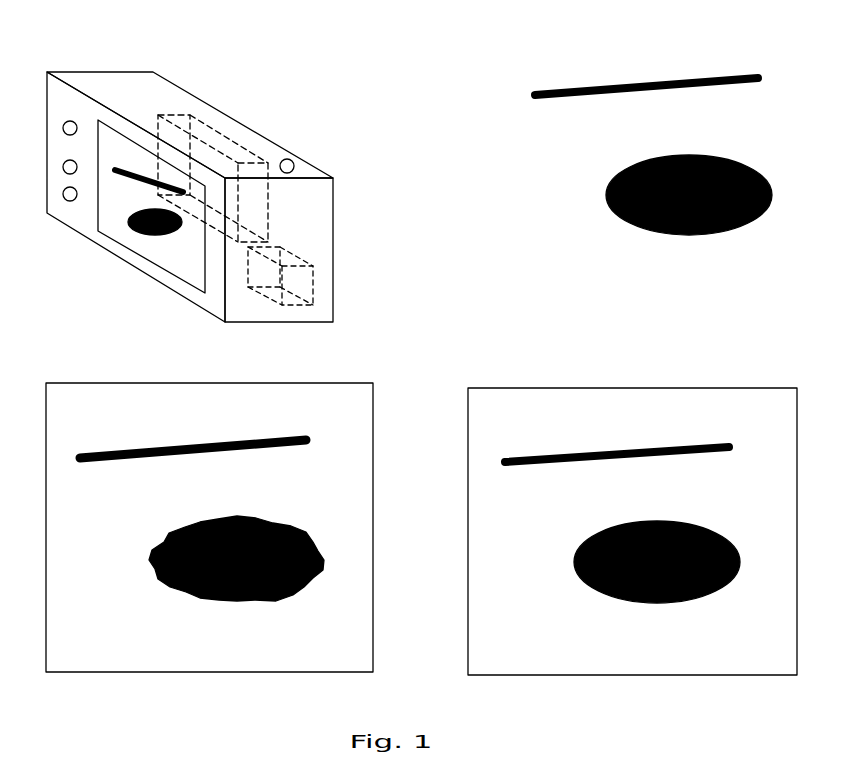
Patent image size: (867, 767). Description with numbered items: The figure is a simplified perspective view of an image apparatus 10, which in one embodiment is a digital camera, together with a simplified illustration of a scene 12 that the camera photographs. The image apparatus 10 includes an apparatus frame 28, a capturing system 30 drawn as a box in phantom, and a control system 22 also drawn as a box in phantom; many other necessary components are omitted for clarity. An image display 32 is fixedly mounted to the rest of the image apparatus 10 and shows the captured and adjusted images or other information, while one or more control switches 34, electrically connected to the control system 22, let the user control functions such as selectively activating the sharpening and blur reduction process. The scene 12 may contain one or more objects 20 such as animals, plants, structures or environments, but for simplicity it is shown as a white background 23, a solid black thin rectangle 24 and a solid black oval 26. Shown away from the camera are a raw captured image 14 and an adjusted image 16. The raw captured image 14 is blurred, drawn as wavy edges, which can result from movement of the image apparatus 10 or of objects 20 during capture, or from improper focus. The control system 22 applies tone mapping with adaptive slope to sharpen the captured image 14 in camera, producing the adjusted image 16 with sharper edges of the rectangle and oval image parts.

The image apparatus 10 is at (151, 80).
The scene 12 is at (510, 189).
The raw captured image 14 is at (375, 551).
The adjusted image 16 is at (460, 435).
The objects 20 is at (518, 97).
The control system 22 is at (302, 285).
The background 23 is at (746, 131).
The rectangle 24 is at (577, 85).
The oval 26 is at (680, 153).
The apparatus frame 28 is at (172, 93).
The capturing system 30 is at (223, 140).
The image display 32 is at (130, 240).
The control switches 34 is at (70, 201).